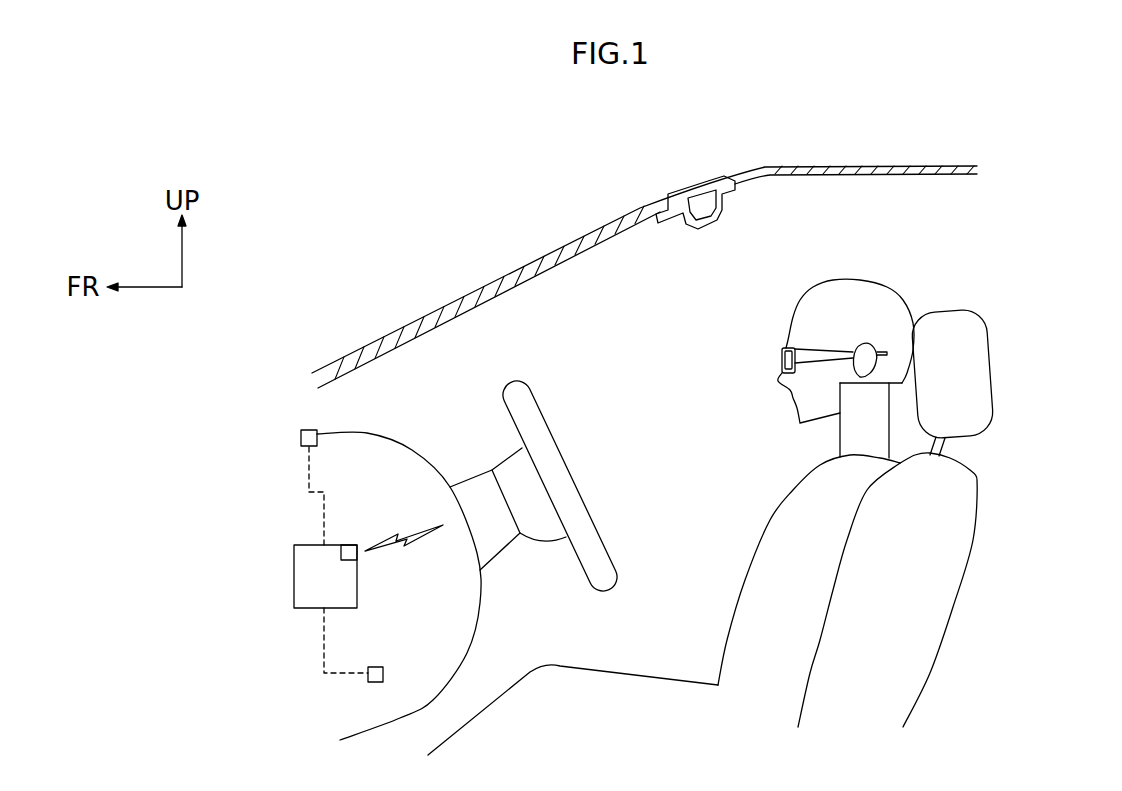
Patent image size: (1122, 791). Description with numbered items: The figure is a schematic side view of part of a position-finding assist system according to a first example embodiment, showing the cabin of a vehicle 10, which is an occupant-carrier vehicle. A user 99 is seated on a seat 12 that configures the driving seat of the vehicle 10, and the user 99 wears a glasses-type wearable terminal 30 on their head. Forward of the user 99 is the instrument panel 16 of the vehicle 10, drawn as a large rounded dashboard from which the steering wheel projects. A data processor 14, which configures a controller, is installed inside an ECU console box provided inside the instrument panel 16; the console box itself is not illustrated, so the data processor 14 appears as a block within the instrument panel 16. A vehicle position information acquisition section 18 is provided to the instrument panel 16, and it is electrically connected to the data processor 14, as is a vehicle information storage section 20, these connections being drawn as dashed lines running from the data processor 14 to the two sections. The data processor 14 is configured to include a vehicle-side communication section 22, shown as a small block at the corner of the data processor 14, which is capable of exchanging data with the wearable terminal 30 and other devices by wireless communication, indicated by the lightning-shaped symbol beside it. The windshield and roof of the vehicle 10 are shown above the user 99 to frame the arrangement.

The vehicle 10 is at (414, 232).
The seat 12 is at (986, 470).
The data processor 14 is at (308, 582).
The instrument panel 16 is at (349, 424).
The vehicle position information acquisition section 18 is at (300, 440).
The vehicle information storage section 20 is at (372, 682).
The vehicle-side communication section 22 is at (349, 545).
The glasses-type wearable terminal 30 is at (774, 340).
The user 99 is at (894, 283).